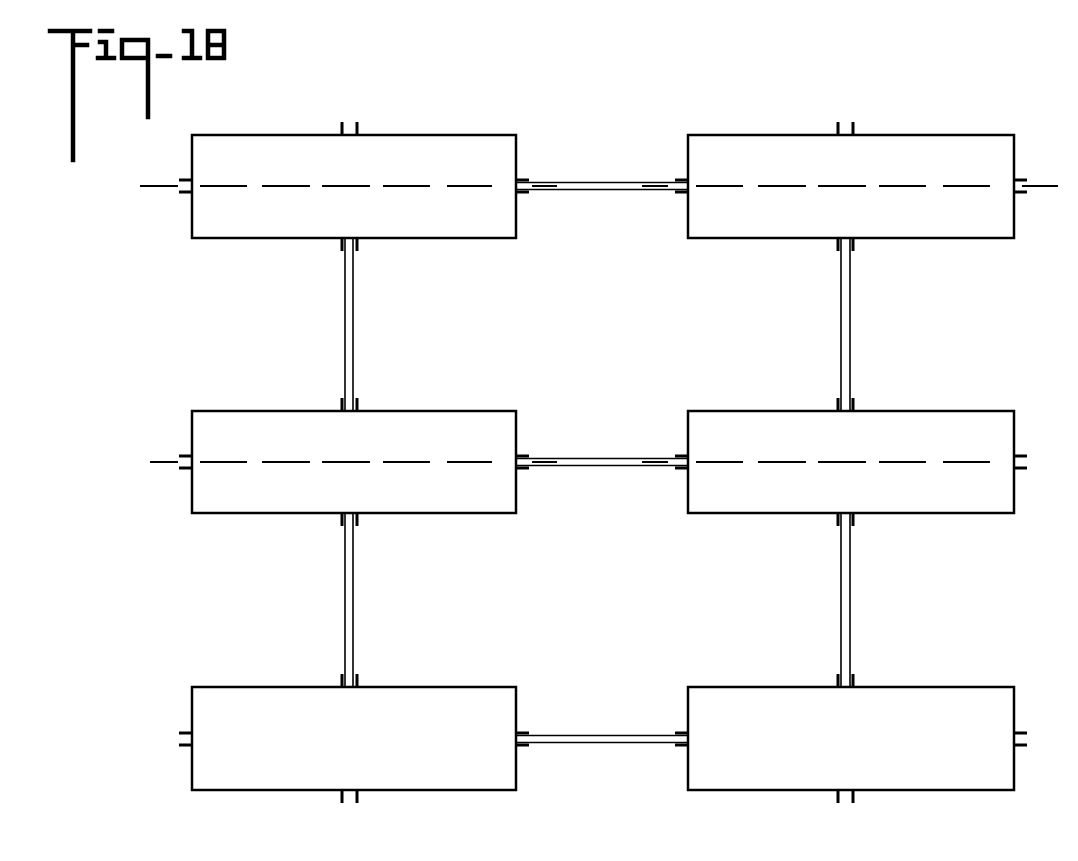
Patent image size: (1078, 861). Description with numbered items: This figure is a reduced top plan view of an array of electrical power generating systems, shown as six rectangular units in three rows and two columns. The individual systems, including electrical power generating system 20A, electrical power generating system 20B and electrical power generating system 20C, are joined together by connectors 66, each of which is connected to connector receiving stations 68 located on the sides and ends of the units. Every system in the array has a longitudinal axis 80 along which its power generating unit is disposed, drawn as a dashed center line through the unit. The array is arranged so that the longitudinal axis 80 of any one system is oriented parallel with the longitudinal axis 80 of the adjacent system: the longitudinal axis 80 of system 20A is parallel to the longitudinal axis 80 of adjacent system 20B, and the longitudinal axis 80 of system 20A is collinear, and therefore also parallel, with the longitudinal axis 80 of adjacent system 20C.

The electrical power generating system 20A is at (431, 114).
The electrical power generating system 20B is at (941, 114).
The electrical power generating system 20C is at (432, 394).
The connector 66 is at (601, 189).
The connector receiving station 68 is at (186, 180).
The longitudinal axis 80 is at (152, 190).